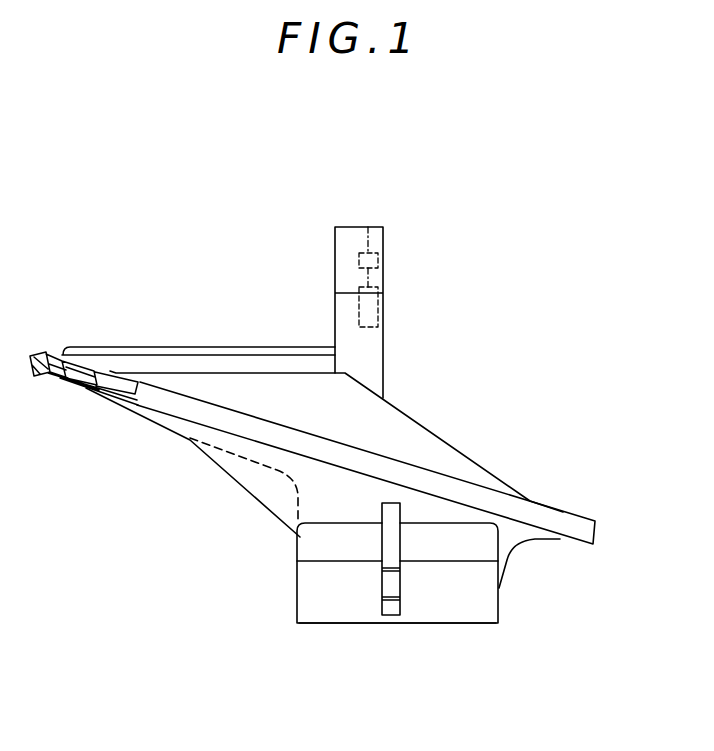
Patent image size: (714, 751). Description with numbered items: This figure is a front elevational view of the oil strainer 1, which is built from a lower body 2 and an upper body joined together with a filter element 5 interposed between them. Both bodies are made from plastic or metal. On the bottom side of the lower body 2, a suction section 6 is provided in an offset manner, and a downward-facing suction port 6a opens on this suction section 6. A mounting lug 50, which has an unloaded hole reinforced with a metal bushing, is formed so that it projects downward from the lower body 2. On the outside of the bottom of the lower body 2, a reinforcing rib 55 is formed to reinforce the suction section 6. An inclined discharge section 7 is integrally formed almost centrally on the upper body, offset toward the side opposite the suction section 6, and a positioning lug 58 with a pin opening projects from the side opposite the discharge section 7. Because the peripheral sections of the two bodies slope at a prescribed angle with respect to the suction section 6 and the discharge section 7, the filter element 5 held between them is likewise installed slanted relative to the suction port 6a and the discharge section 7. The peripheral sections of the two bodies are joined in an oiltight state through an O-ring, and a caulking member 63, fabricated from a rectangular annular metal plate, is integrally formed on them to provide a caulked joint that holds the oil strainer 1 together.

The oil strainer 1 is at (226, 278).
The lower body 2 is at (530, 554).
The filter element 5 is at (86, 396).
The suction section 6 is at (344, 631).
The suction port 6a is at (428, 625).
The discharge section 7 is at (392, 319).
The mounting lug 50 is at (389, 617).
The reinforcing rib 55 is at (258, 494).
The positioning lug 58 is at (367, 227).
The caulking member 63 is at (592, 538).